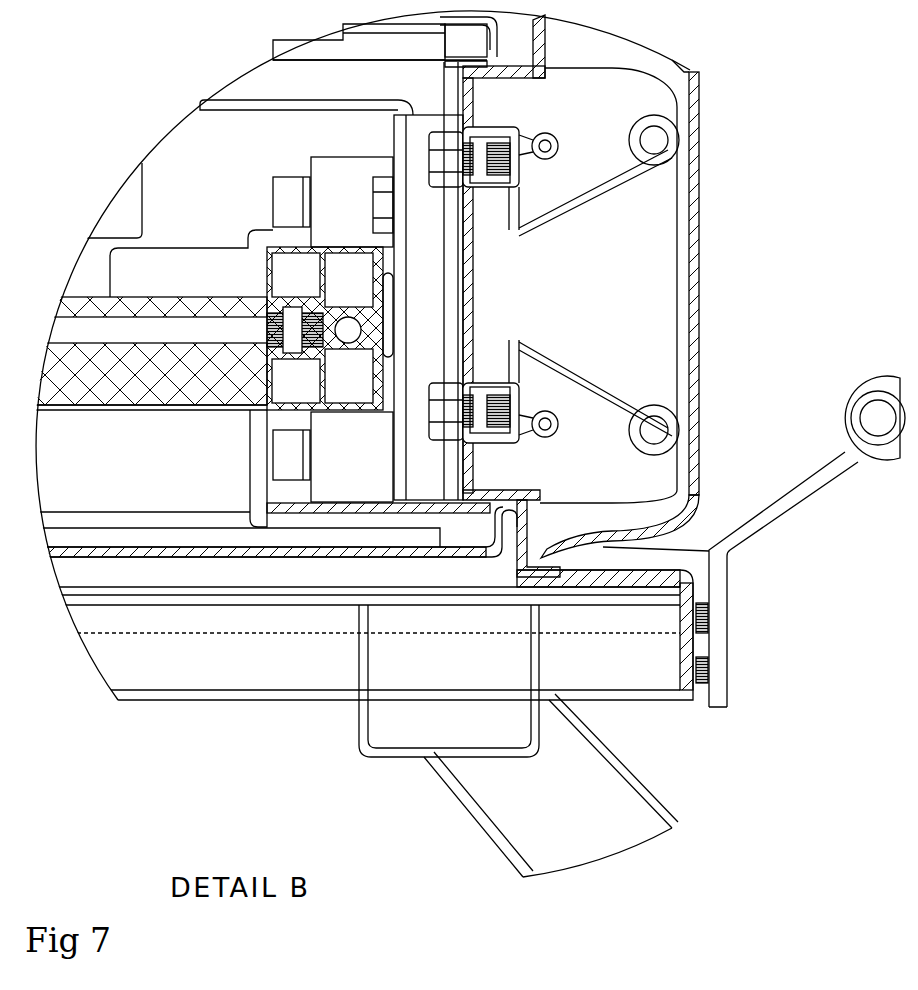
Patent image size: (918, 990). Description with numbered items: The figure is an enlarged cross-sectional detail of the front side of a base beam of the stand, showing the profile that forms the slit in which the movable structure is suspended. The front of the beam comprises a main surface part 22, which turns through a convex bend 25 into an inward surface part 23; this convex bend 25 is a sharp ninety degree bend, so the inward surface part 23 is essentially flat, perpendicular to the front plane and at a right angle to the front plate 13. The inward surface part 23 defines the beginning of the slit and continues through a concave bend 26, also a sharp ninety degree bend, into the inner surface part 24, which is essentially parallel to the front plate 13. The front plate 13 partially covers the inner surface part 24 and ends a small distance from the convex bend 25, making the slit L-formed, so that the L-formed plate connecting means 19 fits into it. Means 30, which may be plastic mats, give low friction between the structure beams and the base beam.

The front plate 13 is at (227, 548).
The plate formed connecting means 19 is at (687, 640).
The main surface part 22 is at (709, 551).
The inward surface part 23 is at (533, 543).
The inner surface part 24 is at (503, 500).
The convex bend 25 is at (536, 558).
The concave bend 26 is at (531, 498).
The means for providing low friction 30 is at (386, 323).